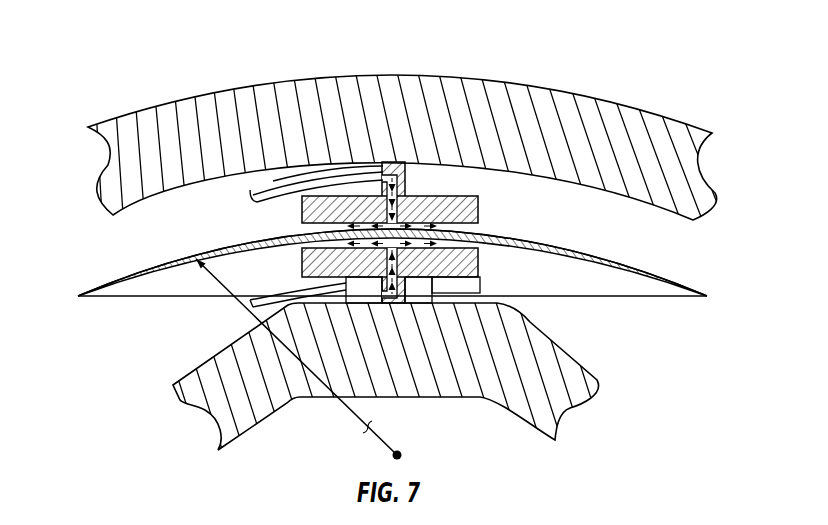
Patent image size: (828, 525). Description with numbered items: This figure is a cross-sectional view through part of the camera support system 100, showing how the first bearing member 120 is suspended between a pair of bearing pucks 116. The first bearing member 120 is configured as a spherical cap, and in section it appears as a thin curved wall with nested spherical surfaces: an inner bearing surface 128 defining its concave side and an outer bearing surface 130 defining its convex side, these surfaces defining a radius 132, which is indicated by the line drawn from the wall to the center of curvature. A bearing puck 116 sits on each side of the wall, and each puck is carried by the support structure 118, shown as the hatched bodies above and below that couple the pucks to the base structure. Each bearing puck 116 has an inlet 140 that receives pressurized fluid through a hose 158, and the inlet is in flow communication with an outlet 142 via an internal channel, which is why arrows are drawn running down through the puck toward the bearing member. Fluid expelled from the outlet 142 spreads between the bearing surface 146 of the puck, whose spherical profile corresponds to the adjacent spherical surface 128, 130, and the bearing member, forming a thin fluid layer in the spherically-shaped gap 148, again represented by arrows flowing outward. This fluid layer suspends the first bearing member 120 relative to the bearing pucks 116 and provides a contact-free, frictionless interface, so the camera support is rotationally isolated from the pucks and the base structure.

The system 100 is at (153, 67).
The bearing puck 116 is at (485, 190).
The support structure 118 is at (703, 180).
The first bearing member 120 is at (364, 291).
The inner bearing surface 128 is at (147, 289).
The outer bearing surface 130 is at (177, 258).
The radius 132 is at (343, 406).
The inlet 140 is at (389, 163).
The outlet 142 is at (397, 223).
The bearing surface 146 is at (312, 220).
The spherically-shaped gap 148 is at (480, 242).
The hose 158 is at (273, 181).